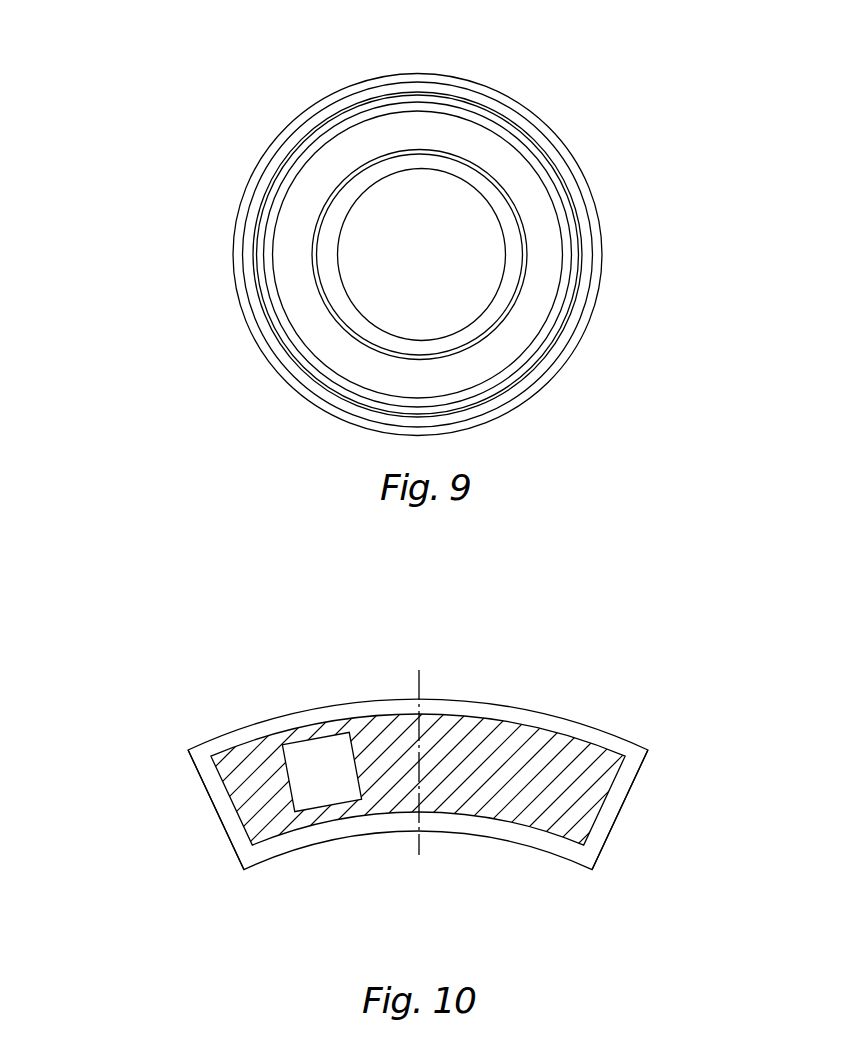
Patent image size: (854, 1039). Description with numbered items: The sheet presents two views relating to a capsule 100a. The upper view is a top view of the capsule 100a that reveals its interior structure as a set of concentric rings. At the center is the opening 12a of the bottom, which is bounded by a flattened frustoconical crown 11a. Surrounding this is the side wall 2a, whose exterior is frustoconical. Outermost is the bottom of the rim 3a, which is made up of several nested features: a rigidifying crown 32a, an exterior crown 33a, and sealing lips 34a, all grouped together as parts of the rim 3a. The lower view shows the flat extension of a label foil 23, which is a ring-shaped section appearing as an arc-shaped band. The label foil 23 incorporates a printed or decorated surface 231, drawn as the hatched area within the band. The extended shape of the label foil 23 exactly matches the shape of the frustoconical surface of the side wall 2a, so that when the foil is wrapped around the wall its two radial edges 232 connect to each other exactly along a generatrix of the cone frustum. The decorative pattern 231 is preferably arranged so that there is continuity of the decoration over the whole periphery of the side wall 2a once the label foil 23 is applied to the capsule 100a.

In FIG. 9, the capsule 100a is at (152, 90).
In FIG. 9, the rim 3a is at (186, 438).
In FIG. 9, the rigidifying crown 32a is at (287, 378).
In FIG. 9, the exterior crown 33a is at (275, 353).
In FIG. 9, the sealing lips 34a is at (287, 322).
In FIG. 9, the side wall 2a is at (292, 238).
In FIG. 9, the flattened frustoconical crown 11a is at (333, 203).
In FIG. 9, the opening 12a is at (390, 198).
In FIG. 10, the label foil 23 is at (438, 775).
In FIG. 10, the printed or decorated surface 231 is at (507, 783).
In FIG. 10, the radial edges 232 is at (222, 823).